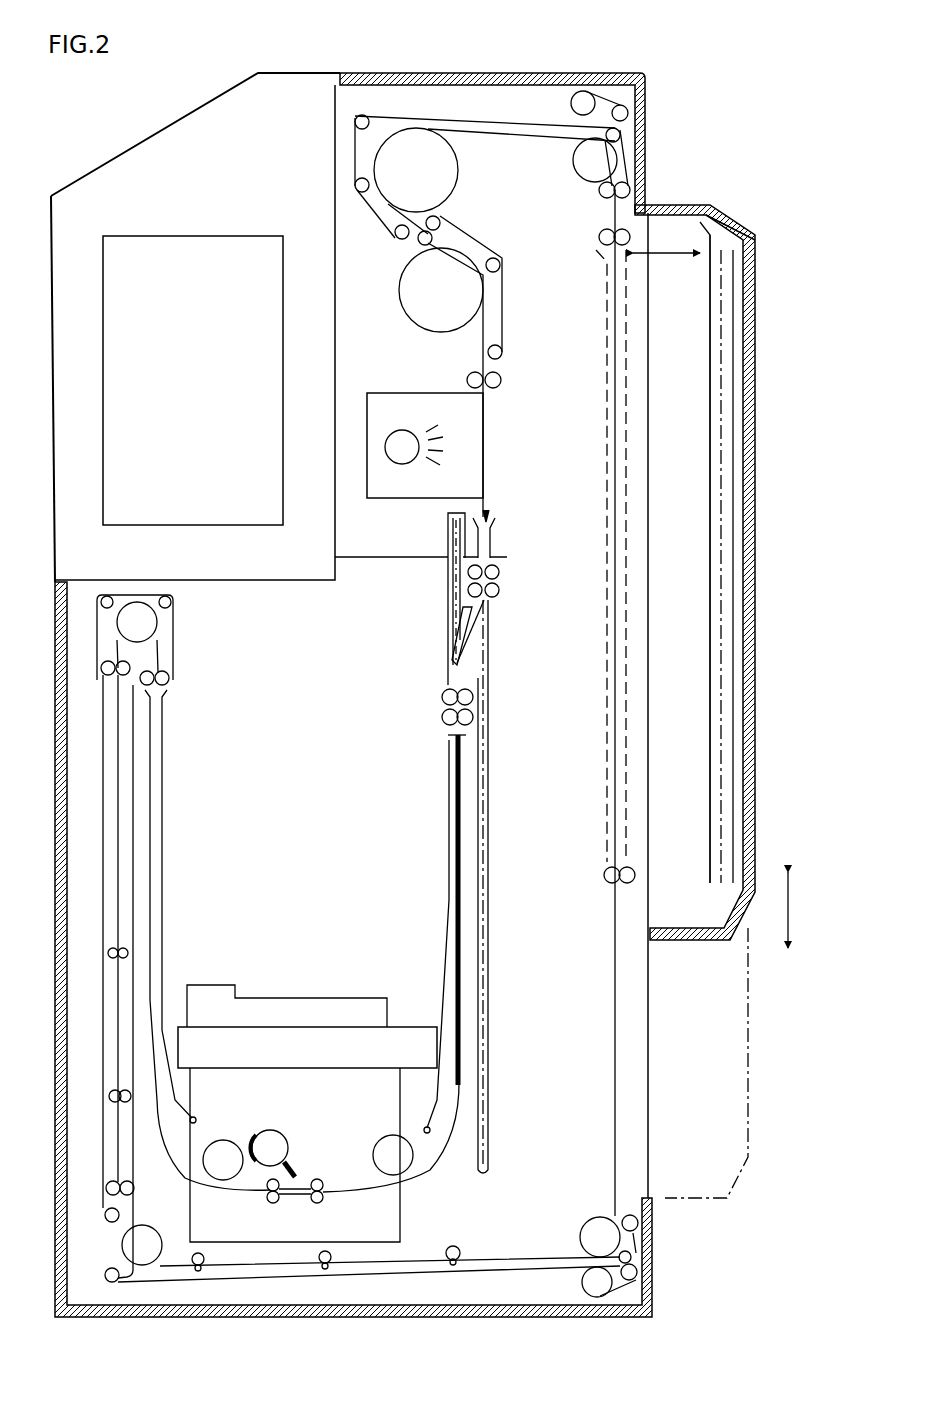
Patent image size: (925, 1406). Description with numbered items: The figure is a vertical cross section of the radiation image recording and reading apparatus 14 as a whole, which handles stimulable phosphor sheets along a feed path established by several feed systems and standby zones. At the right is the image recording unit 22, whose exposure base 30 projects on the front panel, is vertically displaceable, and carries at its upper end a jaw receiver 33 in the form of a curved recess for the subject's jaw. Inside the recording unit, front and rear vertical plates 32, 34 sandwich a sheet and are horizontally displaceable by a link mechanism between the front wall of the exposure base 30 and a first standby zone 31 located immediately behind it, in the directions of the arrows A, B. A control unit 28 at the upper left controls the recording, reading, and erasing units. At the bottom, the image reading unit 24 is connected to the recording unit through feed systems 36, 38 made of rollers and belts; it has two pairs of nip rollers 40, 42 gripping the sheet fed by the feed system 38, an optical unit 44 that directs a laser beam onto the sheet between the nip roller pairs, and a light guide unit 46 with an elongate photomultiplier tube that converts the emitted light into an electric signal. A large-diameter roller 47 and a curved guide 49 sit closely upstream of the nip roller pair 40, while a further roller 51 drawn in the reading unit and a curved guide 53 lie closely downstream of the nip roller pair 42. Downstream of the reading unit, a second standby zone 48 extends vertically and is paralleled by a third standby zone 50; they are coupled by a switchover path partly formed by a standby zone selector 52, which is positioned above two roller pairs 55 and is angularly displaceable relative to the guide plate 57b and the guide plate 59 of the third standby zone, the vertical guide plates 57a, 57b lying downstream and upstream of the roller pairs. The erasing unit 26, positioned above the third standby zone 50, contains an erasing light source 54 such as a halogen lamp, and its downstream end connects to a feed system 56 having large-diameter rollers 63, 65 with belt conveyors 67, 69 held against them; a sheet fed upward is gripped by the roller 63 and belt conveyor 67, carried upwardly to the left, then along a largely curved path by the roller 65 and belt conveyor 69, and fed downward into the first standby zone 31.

The radiation image recording and reading apparatus 14 is at (648, 62).
The image recording unit 22 is at (730, 196).
The jaw receiver 33 is at (738, 214).
The front vertical plate 32 is at (746, 272).
The exposure base 30 is at (756, 632).
The rear vertical plate 34 is at (710, 608).
The control unit 28 is at (103, 372).
The first standby zone 31 is at (600, 462).
The belt conveyor 69 is at (418, 117).
The feed system 56 is at (490, 120).
The upper large-diameter roller 65 is at (443, 188).
The lower large-diameter roller 63 is at (420, 285).
The belt conveyor 67 is at (502, 326).
The erasing unit 26 is at (398, 385).
The erasing light source 54 is at (402, 460).
The guide plate 57b is at (450, 538).
The standby zone selector 52 is at (478, 630).
The roller pairs 55 is at (440, 713).
The guide plate 59 is at (490, 736).
The third standby zone 50 is at (496, 830).
The second standby zone 48 is at (450, 774).
The guide plate 57a is at (447, 940).
The curved guide 53 is at (438, 1160).
The feed system 38 is at (103, 848).
The curved guide 49 is at (176, 1160).
The image reading unit 24 is at (290, 985).
The optical unit 44 is at (368, 1020).
The large-diameter roller 47 is at (224, 1150).
The light guide unit 46 is at (274, 1143).
The roller 51 is at (392, 1148).
The nip roller pair 40 is at (268, 1200).
The nip roller pair 42 is at (322, 1202).
The feed system 36 is at (378, 1270).
The arrow A is at (632, 274).
The arrow B is at (696, 274).